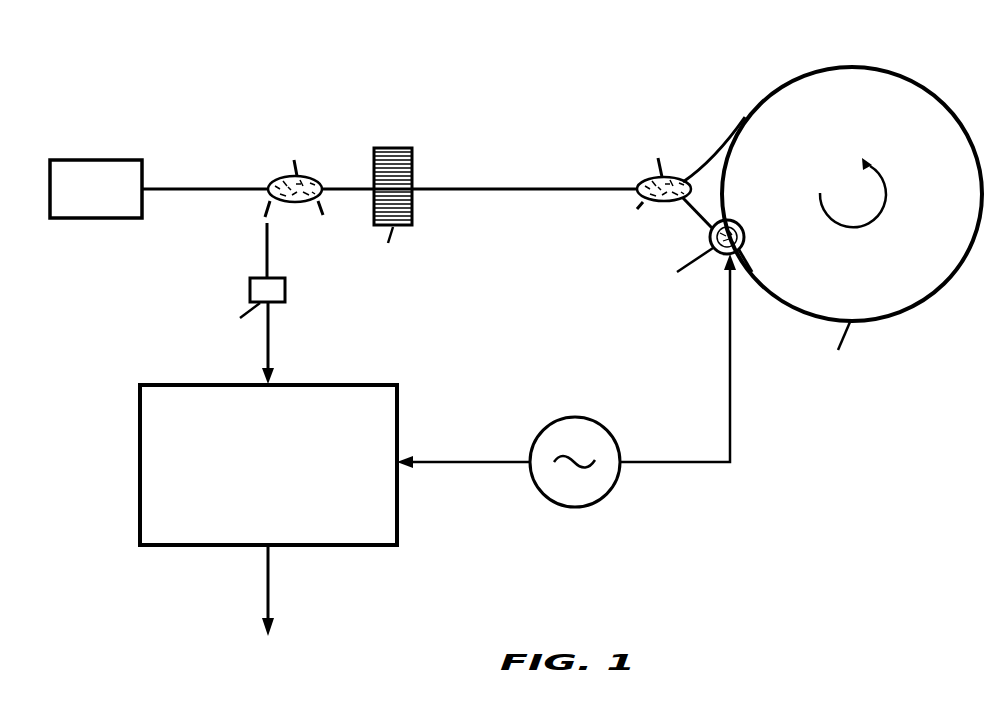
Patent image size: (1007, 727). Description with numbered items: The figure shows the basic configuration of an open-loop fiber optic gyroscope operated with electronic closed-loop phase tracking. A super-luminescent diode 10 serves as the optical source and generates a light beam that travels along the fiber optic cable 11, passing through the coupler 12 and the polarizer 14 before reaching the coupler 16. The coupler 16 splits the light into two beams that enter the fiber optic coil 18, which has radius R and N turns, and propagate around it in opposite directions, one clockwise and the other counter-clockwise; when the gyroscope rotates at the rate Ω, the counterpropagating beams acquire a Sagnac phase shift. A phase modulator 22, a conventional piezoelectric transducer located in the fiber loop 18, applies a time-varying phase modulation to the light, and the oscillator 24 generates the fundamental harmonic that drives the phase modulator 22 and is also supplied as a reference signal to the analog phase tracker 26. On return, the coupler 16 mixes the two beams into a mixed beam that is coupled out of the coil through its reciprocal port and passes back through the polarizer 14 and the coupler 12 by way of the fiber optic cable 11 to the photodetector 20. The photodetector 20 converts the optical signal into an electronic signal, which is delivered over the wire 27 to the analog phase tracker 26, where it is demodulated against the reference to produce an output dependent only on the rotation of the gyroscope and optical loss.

The super-luminescent diode 10 is at (91, 160).
The fiber optic cable 11 is at (181, 189).
The coupler 12 is at (292, 189).
The polarizer 14 is at (411, 148).
The coupler 16 is at (638, 207).
The fiber optic coil 18 is at (867, 67).
The photodetector 20 is at (252, 282).
The phase modulator 22 is at (745, 230).
The oscillator 24 is at (573, 417).
The analog phase tracker 26 is at (140, 457).
The wire 27 is at (270, 331).